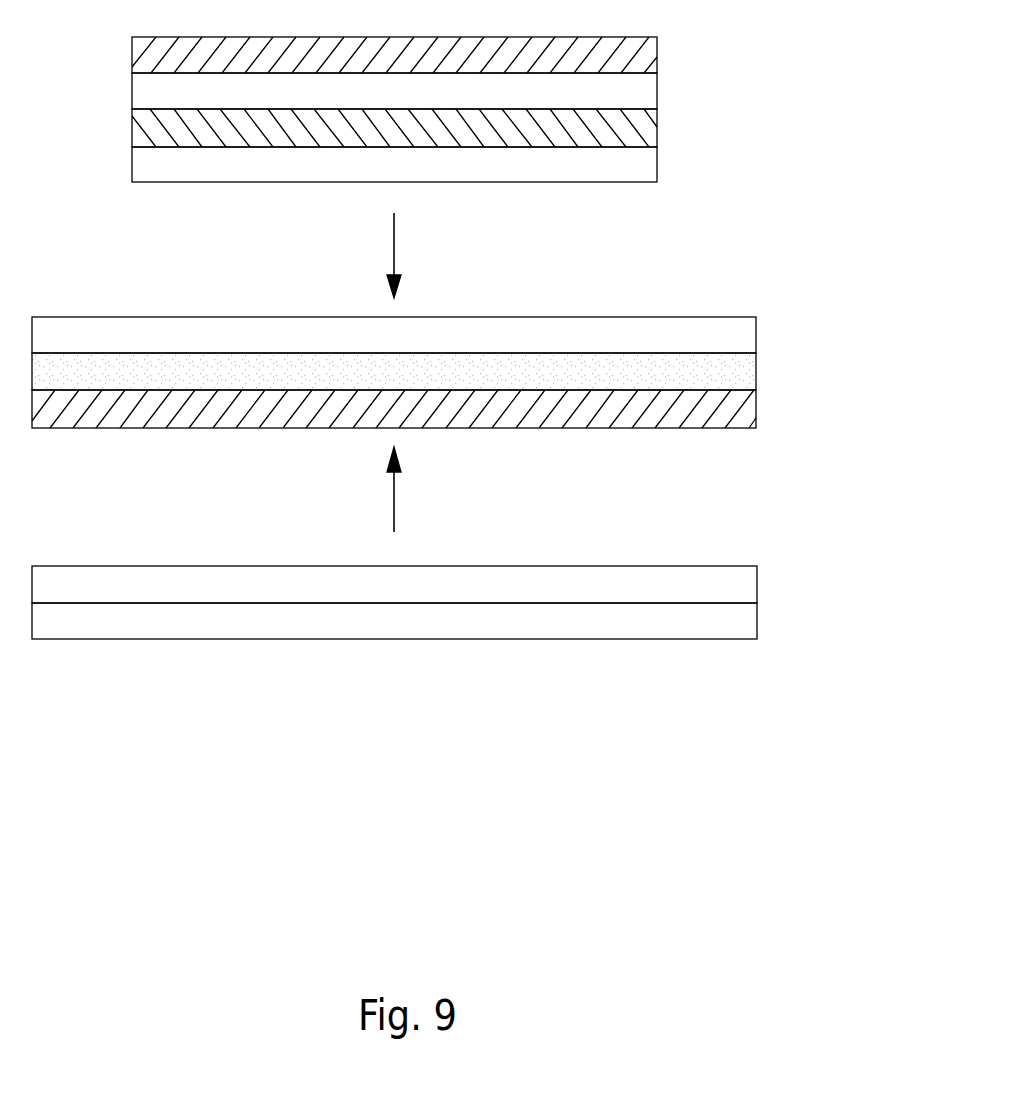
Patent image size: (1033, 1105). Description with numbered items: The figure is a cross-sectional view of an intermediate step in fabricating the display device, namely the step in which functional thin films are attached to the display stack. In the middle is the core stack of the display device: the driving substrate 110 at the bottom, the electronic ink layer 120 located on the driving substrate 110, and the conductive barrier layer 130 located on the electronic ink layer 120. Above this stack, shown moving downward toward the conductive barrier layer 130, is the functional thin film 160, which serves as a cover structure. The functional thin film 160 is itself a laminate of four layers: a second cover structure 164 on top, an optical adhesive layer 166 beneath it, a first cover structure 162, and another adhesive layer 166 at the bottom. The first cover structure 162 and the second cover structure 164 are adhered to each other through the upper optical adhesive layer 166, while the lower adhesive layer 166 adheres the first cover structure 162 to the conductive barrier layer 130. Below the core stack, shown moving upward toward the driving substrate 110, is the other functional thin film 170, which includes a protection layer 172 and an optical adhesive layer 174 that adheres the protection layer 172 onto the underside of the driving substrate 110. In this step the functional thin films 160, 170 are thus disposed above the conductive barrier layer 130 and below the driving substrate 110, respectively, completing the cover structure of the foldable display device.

The driving substrate 110 is at (743, 407).
The electronic ink layer 120 is at (743, 371).
The conductive barrier layer 130 is at (743, 335).
The functional thin film 160 is at (504, 107).
The first cover structure 162 is at (640, 129).
The second cover structure 164 is at (640, 54).
The optical adhesive layer 166 is at (640, 92).
The functional thin film 170 is at (490, 603).
The protection layer 172 is at (743, 624).
The optical adhesive layer 174 is at (743, 587).